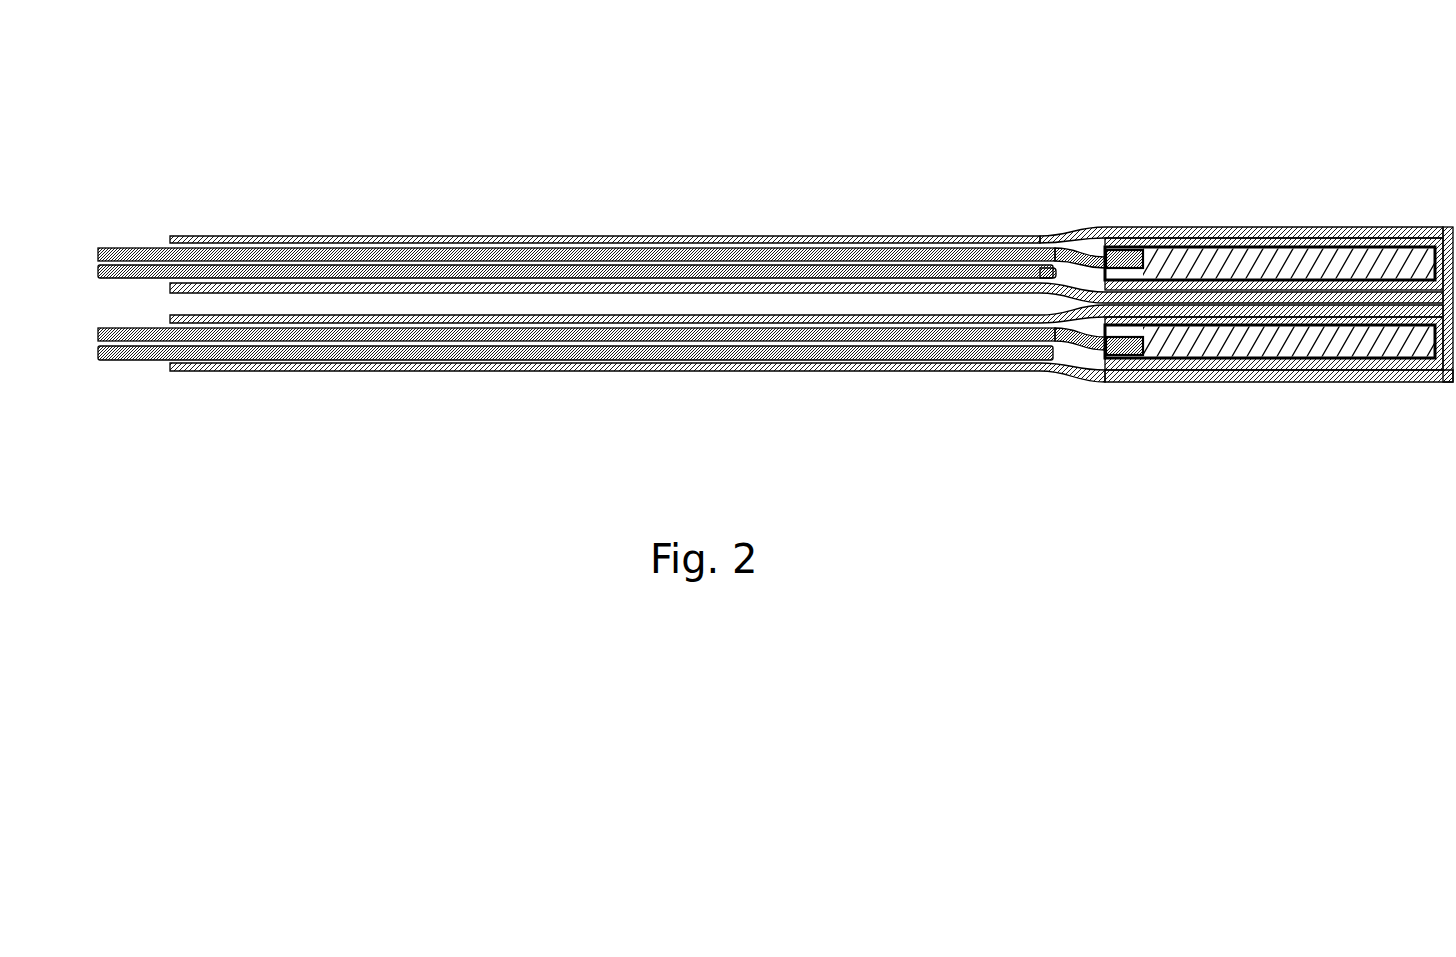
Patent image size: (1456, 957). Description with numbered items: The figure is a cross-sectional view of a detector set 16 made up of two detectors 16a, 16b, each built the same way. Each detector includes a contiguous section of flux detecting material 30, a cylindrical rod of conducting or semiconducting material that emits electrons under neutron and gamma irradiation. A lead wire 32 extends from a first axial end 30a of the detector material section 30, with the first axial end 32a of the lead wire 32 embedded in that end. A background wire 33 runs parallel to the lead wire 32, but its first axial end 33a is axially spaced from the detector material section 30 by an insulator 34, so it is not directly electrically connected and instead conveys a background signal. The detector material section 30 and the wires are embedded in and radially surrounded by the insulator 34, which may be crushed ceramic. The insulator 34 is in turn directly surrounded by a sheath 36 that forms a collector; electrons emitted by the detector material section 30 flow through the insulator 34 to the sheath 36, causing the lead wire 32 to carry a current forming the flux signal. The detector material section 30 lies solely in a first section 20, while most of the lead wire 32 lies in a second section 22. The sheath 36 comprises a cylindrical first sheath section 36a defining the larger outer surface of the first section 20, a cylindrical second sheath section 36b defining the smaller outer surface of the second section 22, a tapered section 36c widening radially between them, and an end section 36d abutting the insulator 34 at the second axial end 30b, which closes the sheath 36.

The detector set 16 is at (776, 292).
The detector 16a is at (1243, 207).
The detector 16b is at (1218, 408).
The first section 20 is at (1192, 383).
The second section 22 is at (615, 373).
The detector material section 30 is at (1187, 265).
The first axial end 30a is at (1125, 243).
The second axial end 30b is at (1430, 238).
The lead wire 32 is at (885, 258).
The first axial end 32a is at (1105, 247).
The background wire 33 is at (750, 262).
The first axial end 33a is at (1043, 283).
The insulator 34 is at (1065, 268).
The sheath 36 is at (812, 247).
The first sheath section 36a is at (1317, 230).
The second sheath section 36b is at (617, 237).
The tapered section 36c is at (1085, 298).
The end section 36d is at (1455, 150).